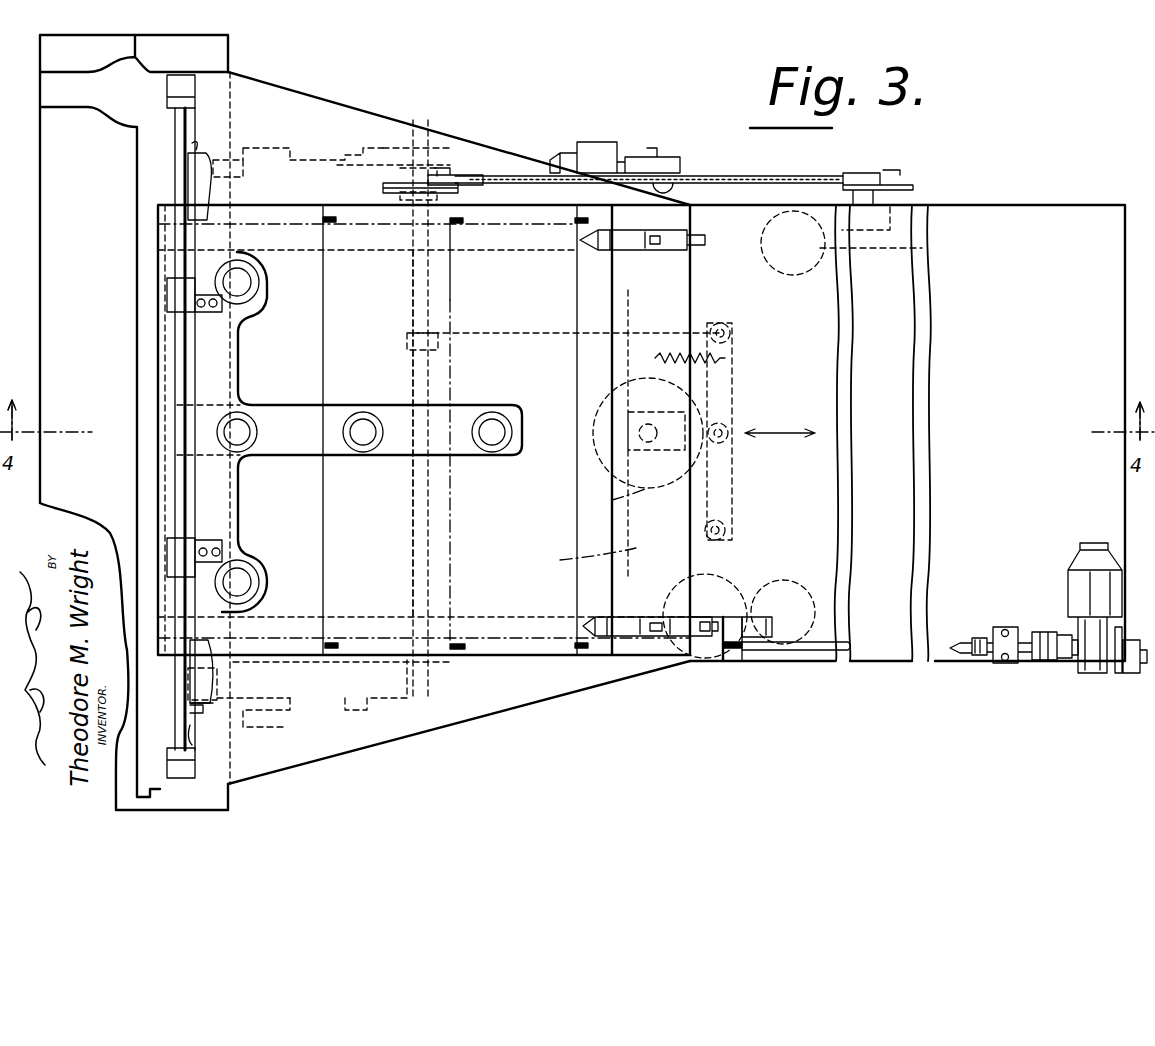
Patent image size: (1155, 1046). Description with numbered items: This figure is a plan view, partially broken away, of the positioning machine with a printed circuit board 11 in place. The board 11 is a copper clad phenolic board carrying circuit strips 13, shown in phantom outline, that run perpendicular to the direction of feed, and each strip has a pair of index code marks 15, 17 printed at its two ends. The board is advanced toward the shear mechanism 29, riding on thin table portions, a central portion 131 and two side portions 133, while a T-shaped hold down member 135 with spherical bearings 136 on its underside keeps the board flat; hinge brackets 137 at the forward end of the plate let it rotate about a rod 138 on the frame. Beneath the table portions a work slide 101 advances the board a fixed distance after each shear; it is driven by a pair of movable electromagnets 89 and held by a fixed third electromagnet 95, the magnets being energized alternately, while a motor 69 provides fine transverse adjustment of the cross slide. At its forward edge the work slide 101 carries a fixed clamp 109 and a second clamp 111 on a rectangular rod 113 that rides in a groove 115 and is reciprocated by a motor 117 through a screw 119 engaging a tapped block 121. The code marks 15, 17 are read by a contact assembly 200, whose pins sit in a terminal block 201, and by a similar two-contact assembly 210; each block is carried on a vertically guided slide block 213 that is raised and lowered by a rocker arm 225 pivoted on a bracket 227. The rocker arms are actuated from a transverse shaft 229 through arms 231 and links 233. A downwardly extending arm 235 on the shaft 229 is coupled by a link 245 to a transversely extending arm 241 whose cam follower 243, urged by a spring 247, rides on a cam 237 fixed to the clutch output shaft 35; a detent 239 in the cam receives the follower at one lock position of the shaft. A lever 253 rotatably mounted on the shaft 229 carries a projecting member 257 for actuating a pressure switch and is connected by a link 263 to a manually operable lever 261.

The printed circuit board 11 is at (534, 694).
The circuit strips 13 is at (350, 222).
The index code marks 15 is at (338, 643).
The index code marks 17 is at (582, 217).
The shear mechanism 29 is at (128, 238).
The clutch output shaft 35 is at (655, 425).
The motor 69 is at (605, 145).
The electromagnets 89 is at (742, 580).
The third electromagnet 95 is at (856, 243).
The work slide 101 is at (808, 552).
The clamp 109 is at (632, 256).
The clamp 111 is at (637, 618).
The rectangular rod 113 is at (708, 638).
The rectangular groove 115 is at (762, 640).
The motor 117 is at (1068, 590).
The screw 119 is at (799, 632).
The tapped block 121 is at (728, 652).
The central table portion 131 is at (668, 556).
The side table portions 133 is at (400, 128).
The hold down member 135 is at (308, 443).
The spherical bearings 136 is at (247, 427).
The hinge brackets 137 is at (170, 307).
The rod 138 is at (182, 352).
The contact assembly 200 is at (215, 682).
The terminal block 201 is at (210, 200).
The contact assembly 210 is at (203, 160).
The slide block 213 is at (187, 143).
The rocker arms 225 is at (315, 165).
The bracket 227 is at (280, 150).
The transverse shaft 229 is at (413, 510).
The arms 231 is at (385, 180).
The link 233 is at (372, 160).
The downwardly extending arm 235 is at (410, 351).
The cam 237 is at (640, 492).
The detent 239 is at (700, 440).
The transversely extending arm 241 is at (730, 489).
The cam follower 243 is at (716, 425).
The link 245 is at (537, 322).
The spring 247 is at (680, 354).
The lever 253 is at (435, 180).
The projecting member 257 is at (465, 190).
The manually operable lever 261 is at (913, 185).
The link 263 is at (745, 160).